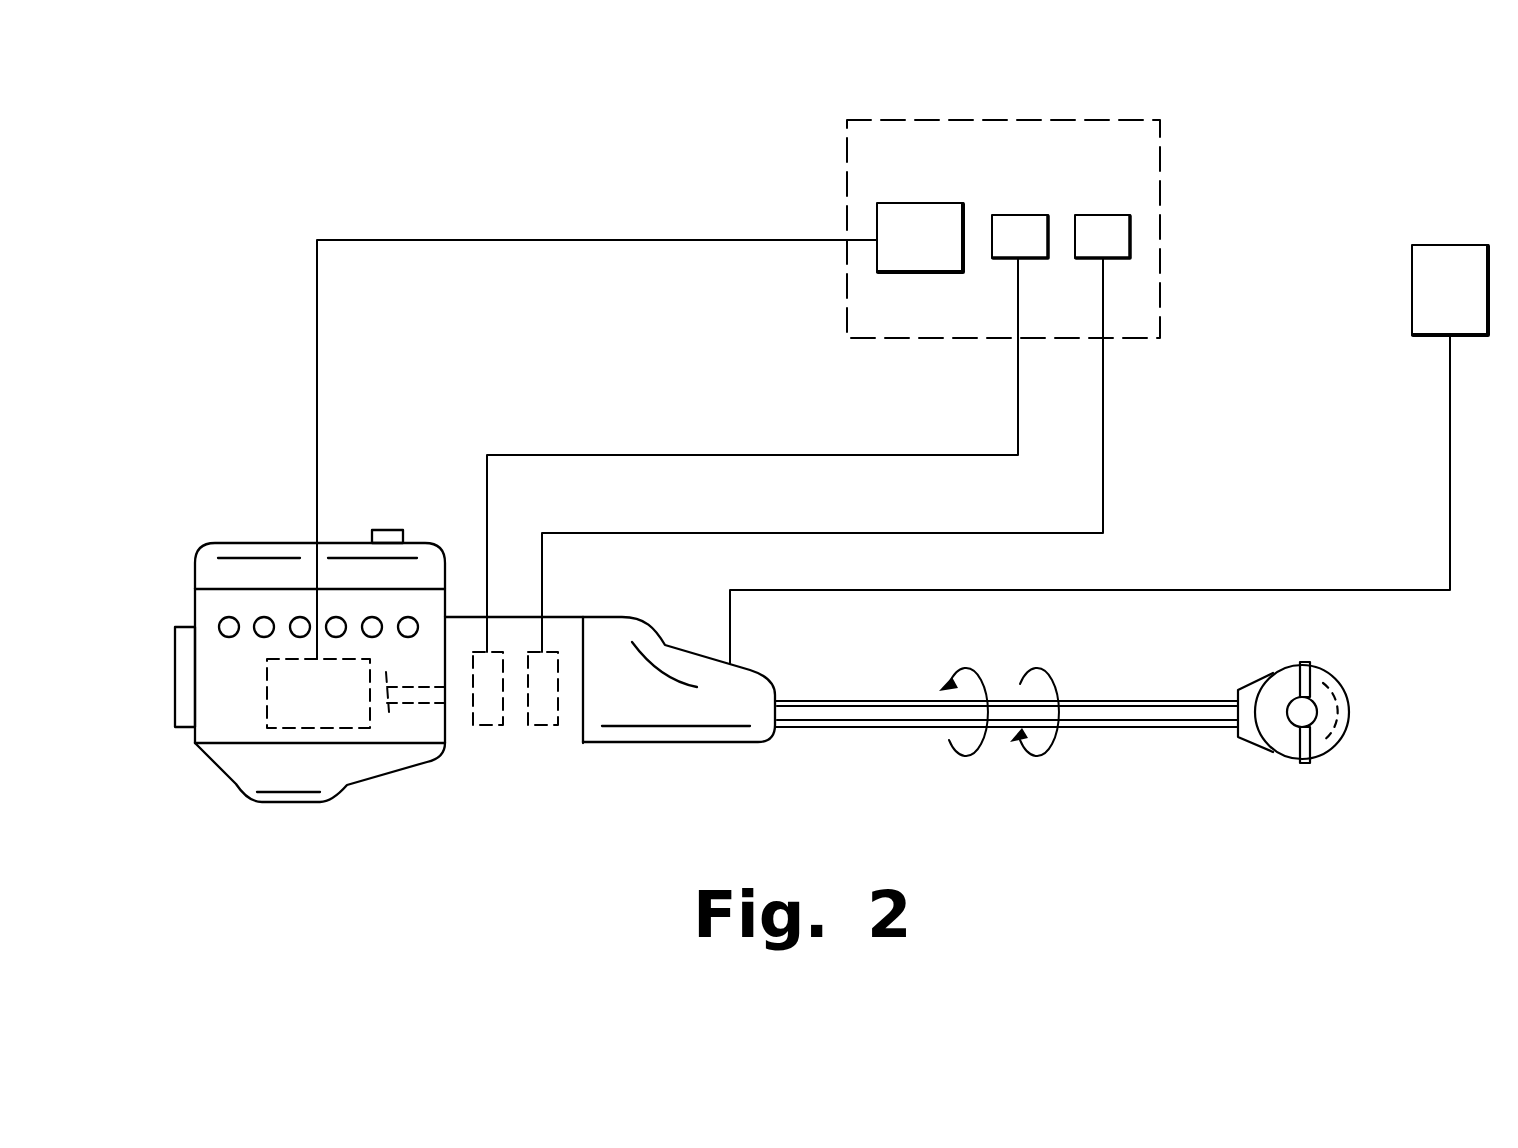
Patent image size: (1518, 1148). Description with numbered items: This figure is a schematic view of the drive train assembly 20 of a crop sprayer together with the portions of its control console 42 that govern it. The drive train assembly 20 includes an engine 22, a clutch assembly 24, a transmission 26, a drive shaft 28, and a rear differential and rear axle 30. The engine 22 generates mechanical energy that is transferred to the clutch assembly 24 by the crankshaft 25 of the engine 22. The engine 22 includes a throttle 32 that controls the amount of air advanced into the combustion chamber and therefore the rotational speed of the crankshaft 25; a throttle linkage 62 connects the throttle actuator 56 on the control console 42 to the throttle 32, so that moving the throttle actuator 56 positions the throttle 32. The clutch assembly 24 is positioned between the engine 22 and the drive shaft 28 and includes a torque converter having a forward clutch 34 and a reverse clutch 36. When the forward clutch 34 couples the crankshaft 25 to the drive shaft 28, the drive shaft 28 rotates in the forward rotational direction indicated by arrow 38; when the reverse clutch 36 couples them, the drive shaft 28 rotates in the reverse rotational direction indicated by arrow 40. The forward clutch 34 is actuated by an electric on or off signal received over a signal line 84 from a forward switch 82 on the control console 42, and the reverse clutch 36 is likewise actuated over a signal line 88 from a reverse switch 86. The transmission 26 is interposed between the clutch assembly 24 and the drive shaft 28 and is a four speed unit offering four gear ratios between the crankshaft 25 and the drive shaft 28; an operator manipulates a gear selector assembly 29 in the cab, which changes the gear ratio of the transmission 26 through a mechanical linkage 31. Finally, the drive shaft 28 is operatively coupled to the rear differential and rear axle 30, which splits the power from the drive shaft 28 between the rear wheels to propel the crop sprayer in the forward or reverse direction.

The drive train assembly 20 is at (256, 194).
The engine 22 is at (217, 758).
The clutch assembly 24 is at (567, 727).
The crankshaft 25 is at (417, 707).
The transmission 26 is at (760, 732).
The drive shaft 28 is at (1113, 712).
The gear selector assembly 29 is at (1450, 245).
The rear differential and rear axle 30 is at (1347, 710).
The mechanical linkage 31 is at (1240, 590).
The throttle 32 is at (266, 688).
The forward clutch 34 is at (485, 712).
The reverse clutch 36 is at (540, 712).
The arrow 38 is at (962, 668).
The arrow 40 is at (1028, 672).
The control console 42 is at (1160, 188).
The throttle actuator 56 is at (917, 203).
The throttle linkage 62 is at (507, 240).
The forward switch 82 is at (1020, 215).
The signal line 84 is at (633, 455).
The reverse switch 86 is at (1107, 215).
The signal line 88 is at (738, 533).